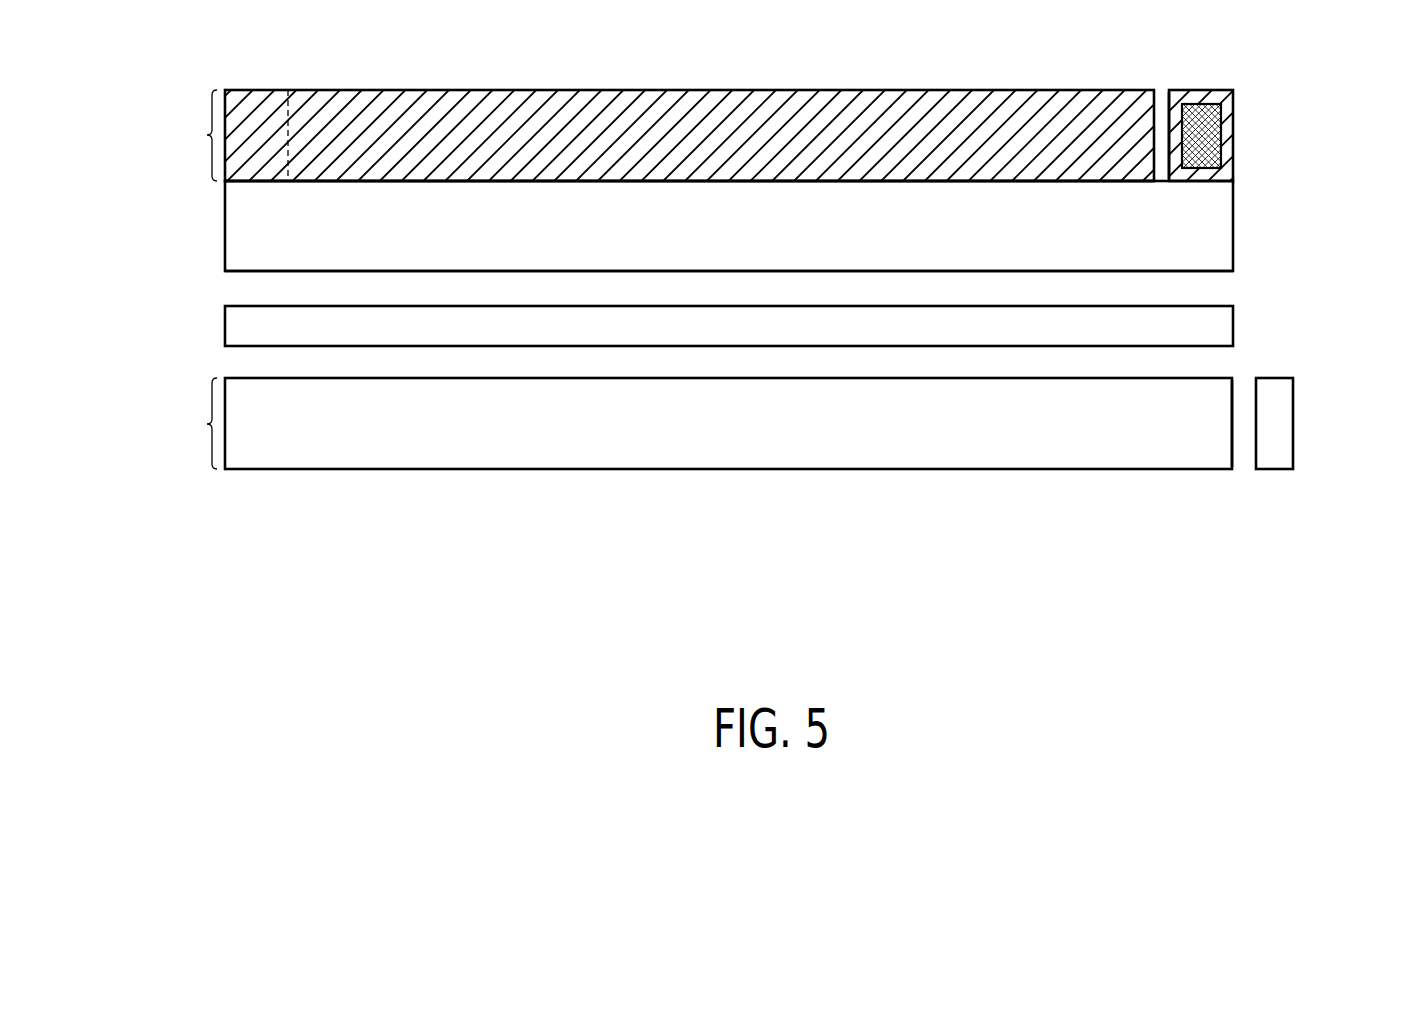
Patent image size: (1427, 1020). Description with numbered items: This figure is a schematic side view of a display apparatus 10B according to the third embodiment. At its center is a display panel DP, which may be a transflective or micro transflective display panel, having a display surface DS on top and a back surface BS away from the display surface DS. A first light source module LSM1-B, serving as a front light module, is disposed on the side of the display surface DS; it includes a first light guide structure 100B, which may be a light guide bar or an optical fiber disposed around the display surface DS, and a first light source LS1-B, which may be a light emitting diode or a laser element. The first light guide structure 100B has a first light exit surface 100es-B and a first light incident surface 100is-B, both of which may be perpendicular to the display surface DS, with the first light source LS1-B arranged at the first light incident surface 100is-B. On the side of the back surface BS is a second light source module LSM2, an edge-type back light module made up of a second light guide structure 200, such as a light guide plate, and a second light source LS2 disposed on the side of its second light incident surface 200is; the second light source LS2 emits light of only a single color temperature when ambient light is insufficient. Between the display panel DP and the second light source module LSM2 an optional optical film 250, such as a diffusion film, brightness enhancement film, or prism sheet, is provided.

The first light guide structure 100B is at (673, 128).
The first light exit surface 100es-B is at (298, 146).
The first light incident surface 100is-B is at (1177, 118).
The display surface DS is at (832, 178).
The first light source LS1-B is at (1200, 142).
The first light source module LSM1-B is at (162, 135).
The display panel DP is at (1193, 234).
The back surface BS is at (1190, 277).
The optical film 250 is at (258, 330).
The second light source module LSM2 is at (172, 423).
The second light guide structure 200 is at (728, 418).
The second light incident surface 200is is at (1237, 436).
The second light source LS2 is at (1275, 428).
The display apparatus 10B is at (1424, 611).